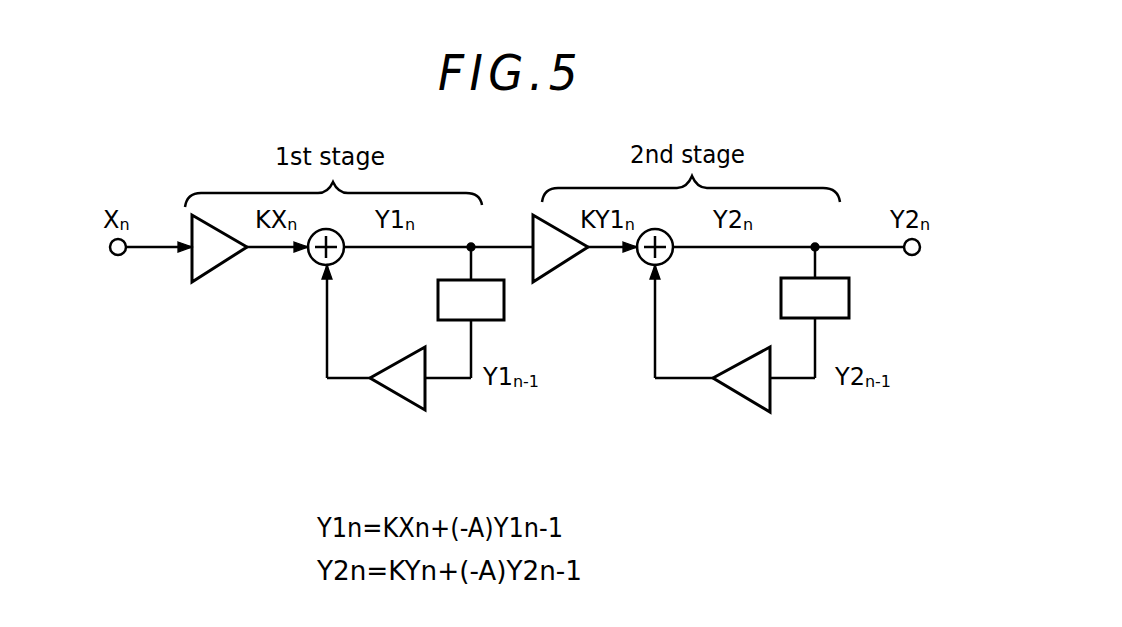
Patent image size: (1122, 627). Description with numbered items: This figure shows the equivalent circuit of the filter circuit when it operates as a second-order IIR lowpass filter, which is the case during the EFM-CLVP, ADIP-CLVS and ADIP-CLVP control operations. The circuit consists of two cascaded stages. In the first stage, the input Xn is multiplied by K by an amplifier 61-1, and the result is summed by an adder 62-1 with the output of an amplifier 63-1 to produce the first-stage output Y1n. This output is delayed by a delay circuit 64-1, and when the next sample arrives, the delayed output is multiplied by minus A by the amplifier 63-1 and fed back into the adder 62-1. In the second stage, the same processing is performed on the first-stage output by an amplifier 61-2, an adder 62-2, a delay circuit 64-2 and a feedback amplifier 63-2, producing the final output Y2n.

The amplifier 61-1 is at (191, 270).
The adder 62-1 is at (312, 262).
The amplifier 63-1 is at (392, 393).
The delay circuit 64-1 is at (438, 310).
The amplifier 61-2 is at (565, 263).
The adder 62-2 is at (668, 262).
The amplifier 63-2 is at (740, 395).
The delay circuit 64-2 is at (849, 298).